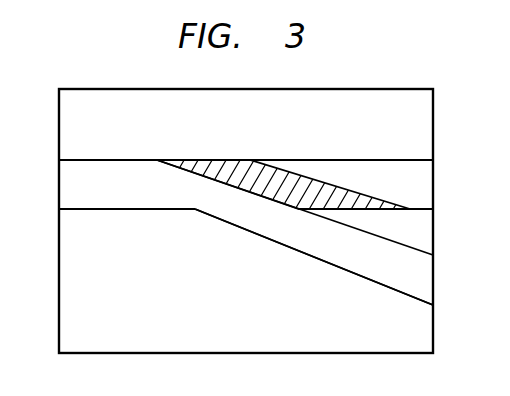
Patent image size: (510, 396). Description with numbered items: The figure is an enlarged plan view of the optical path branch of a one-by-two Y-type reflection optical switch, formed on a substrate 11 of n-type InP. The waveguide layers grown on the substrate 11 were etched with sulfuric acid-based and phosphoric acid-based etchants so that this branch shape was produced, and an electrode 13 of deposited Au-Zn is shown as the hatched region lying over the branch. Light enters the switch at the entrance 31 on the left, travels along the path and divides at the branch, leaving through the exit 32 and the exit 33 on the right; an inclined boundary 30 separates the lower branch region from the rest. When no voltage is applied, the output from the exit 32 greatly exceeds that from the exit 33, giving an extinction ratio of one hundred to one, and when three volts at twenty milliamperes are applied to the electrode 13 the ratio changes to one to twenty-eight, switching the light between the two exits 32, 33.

The substrate 11 is at (433, 128).
The electrode 13 is at (333, 183).
The inclined interface line 30 is at (227, 222).
The entrance 31 is at (58, 185).
The exit 32 is at (433, 180).
The exit 33 is at (433, 278).